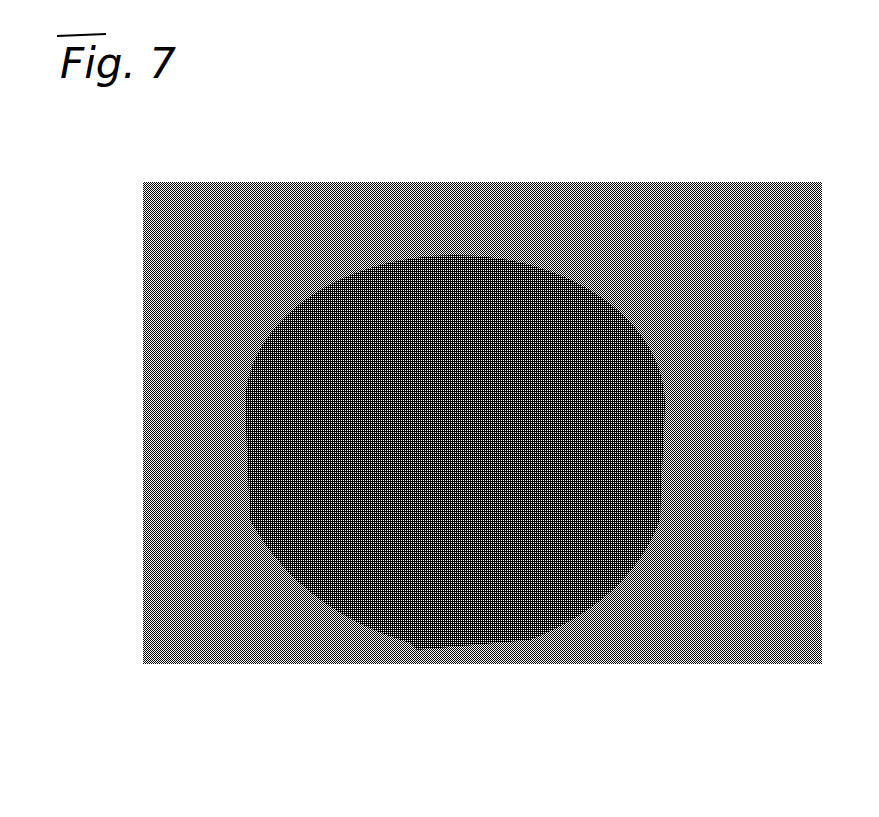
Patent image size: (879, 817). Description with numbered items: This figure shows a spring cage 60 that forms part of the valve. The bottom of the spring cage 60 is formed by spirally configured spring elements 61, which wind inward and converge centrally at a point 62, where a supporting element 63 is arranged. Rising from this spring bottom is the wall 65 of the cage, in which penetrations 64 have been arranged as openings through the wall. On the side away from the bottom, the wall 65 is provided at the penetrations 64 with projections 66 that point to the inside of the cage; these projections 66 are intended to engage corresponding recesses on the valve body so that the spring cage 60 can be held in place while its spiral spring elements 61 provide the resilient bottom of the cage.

The spring cage 60 is at (194, 516).
The spring elements 61 is at (515, 523).
The point 62 is at (500, 590).
The supporting element 63 is at (372, 505).
The penetrations 64 is at (600, 395).
The wall 65 is at (600, 380).
The projections 66 is at (462, 291).